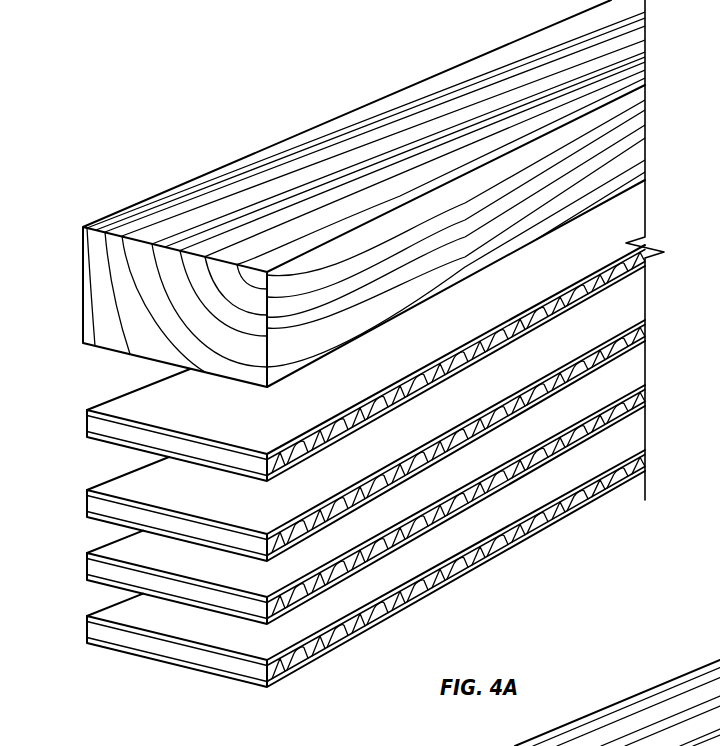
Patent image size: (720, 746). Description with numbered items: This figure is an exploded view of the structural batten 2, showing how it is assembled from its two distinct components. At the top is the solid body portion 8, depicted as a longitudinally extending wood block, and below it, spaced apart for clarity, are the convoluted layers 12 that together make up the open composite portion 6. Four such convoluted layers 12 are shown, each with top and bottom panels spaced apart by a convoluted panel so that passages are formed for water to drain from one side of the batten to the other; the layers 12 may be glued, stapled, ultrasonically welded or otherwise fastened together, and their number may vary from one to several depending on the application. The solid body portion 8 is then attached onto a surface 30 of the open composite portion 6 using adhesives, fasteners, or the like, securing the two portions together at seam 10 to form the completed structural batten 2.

The structural batten 2 is at (238, 118).
The open composite portion 6 is at (338, 655).
The solid body portion 8 is at (83, 277).
The seam 10 is at (638, 222).
The convoluted layer 12 is at (87, 418).
The surface 30 is at (633, 193).